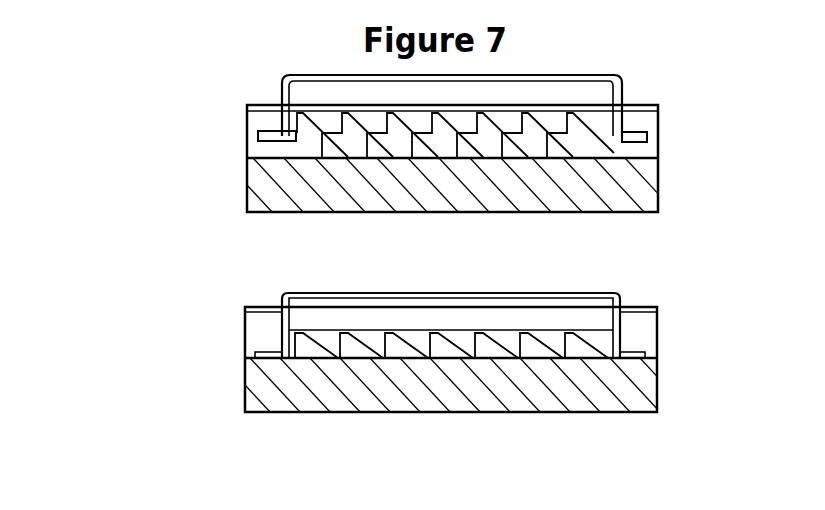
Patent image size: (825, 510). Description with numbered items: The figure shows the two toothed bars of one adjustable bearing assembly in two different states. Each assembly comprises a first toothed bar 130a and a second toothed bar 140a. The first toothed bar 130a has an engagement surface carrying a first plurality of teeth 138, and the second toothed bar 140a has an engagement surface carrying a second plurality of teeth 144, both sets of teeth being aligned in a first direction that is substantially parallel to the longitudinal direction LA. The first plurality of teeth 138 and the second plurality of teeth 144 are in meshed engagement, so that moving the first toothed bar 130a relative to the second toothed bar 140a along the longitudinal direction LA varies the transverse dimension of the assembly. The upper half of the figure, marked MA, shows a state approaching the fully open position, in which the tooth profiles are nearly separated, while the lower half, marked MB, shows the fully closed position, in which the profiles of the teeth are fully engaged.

The first toothed bar 130a is at (632, 119).
The second toothed bar 140a is at (632, 171).
The second plurality of teeth 144 is at (452, 182).
The first plurality of teeth 138 is at (373, 120).
The state approaching the fully open position MA is at (216, 170).
The fully closed position MB is at (216, 376).
The longitudinal direction LA is at (347, 257).